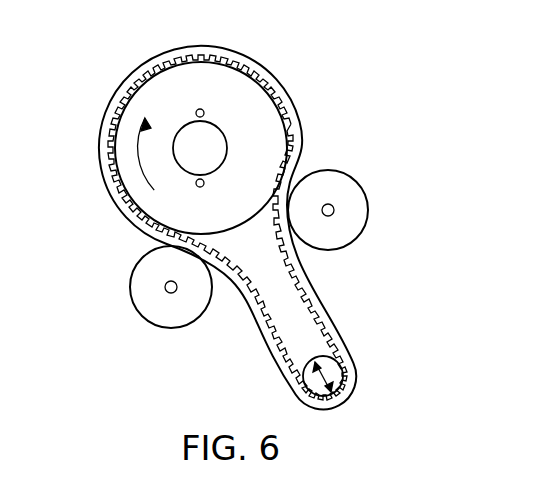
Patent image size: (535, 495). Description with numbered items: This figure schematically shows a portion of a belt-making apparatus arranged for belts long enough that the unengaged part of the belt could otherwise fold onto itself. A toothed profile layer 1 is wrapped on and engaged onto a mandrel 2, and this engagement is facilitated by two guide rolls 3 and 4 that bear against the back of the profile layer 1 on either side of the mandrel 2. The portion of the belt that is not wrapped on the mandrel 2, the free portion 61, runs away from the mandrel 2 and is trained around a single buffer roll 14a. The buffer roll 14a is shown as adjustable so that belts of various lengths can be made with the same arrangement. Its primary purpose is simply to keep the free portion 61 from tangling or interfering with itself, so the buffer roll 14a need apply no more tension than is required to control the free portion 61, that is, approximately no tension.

The profile layer 1 is at (232, 56).
The mandrel 2 is at (258, 104).
The guide roll 3 is at (342, 193).
The guide roll 4 is at (153, 305).
The free portion 61 is at (333, 318).
The buffer roll 14a is at (338, 374).